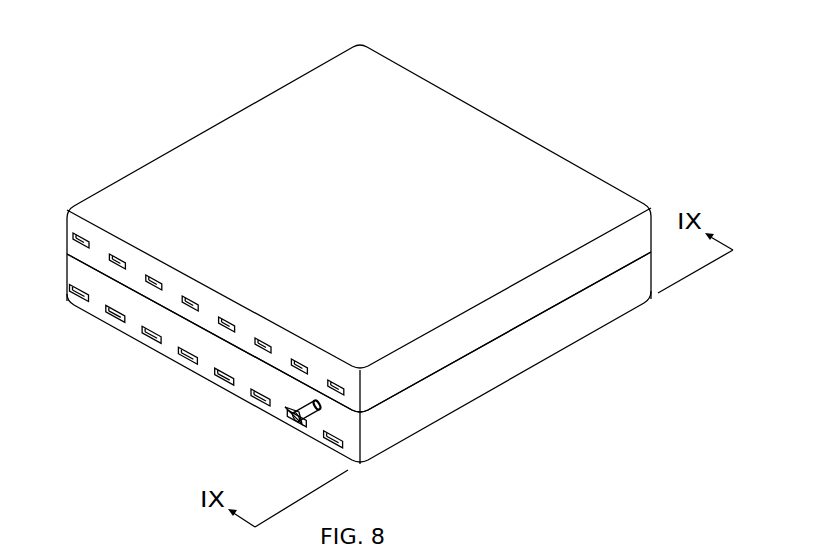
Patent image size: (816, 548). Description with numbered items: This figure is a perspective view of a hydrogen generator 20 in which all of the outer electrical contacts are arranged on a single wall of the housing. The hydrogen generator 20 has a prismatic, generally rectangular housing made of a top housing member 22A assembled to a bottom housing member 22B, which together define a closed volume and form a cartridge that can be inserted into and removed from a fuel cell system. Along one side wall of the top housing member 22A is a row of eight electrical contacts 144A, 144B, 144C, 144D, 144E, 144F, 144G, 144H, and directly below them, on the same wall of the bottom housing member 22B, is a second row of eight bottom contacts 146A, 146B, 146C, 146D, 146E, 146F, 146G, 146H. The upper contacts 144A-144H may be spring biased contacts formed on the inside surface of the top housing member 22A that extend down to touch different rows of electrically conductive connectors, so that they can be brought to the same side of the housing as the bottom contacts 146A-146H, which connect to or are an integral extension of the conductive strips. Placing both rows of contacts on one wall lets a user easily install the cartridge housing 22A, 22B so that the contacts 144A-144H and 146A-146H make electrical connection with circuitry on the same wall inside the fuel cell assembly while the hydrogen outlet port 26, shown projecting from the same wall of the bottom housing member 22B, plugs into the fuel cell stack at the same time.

The hydrogen generator 20 is at (134, 104).
The top housing member 22A is at (463, 130).
The bottom housing member 22B is at (462, 390).
The hydrogen outlet port 26 is at (292, 418).
The electrical contact 144A is at (75, 234).
The electrical contact 144B is at (112, 254).
The electrical contact 144C is at (148, 274).
The electrical contact 144D is at (185, 295).
The electrical contact 144E is at (221, 316).
The electrical contact 144F is at (258, 337).
The electrical contact 144G is at (294, 358).
The electrical contact 144H is at (331, 379).
The bottom contact 146A is at (72, 292).
The bottom contact 146B is at (108, 312).
The bottom contact 146C is at (145, 333).
The bottom contact 146D is at (182, 355).
The bottom contact 146E is at (218, 377).
The bottom contact 146F is at (252, 395).
The bottom contact 146G is at (288, 413).
The bottom contact 146H is at (325, 435).